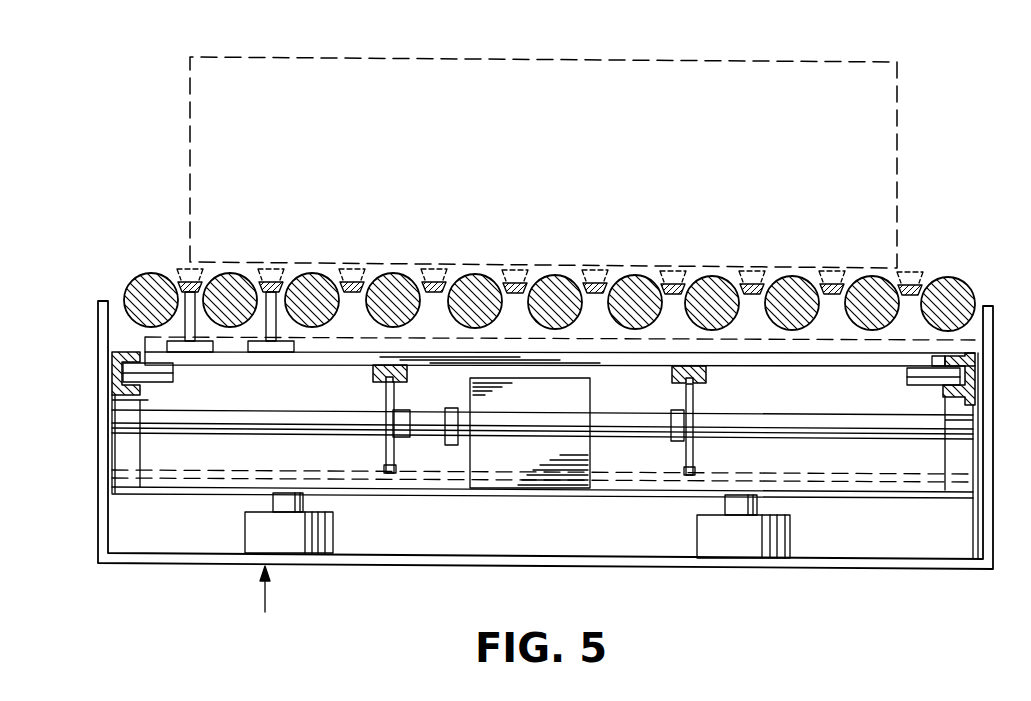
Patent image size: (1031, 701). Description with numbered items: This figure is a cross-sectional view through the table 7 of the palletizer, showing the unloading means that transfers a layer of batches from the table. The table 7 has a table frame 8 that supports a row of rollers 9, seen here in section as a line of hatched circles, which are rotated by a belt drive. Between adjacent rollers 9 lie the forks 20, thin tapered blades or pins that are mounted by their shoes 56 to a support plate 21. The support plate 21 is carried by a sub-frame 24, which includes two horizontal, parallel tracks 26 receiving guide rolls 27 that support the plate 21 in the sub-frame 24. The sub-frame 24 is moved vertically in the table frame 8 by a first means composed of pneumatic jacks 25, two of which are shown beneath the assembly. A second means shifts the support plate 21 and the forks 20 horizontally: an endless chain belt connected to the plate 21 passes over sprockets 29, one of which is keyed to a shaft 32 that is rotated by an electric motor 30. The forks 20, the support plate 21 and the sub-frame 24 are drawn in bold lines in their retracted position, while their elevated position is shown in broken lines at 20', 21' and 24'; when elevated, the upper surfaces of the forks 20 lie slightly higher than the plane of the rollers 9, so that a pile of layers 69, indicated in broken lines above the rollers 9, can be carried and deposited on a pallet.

The table 7 is at (98, 343).
The table frame 8 is at (262, 604).
The rollers 9 is at (143, 280).
The forks 20 is at (550, 257).
The elevated position of the forks 20' is at (550, 251).
The support plate 21 is at (560, 481).
The elevated position of the support plate 21' is at (560, 285).
The sub-frame 24 is at (509, 474).
The elevated position of the sub-frame 24' is at (542, 555).
The pneumatic jacks 25 is at (285, 540).
The tracks 26 is at (128, 352).
The guide rolls 27 is at (140, 383).
The sprockets 29 is at (390, 450).
The electric motor 30 is at (537, 473).
The shaft 32 is at (368, 422).
The shoe 56 is at (184, 288).
The pile of layers 69 is at (330, 59).